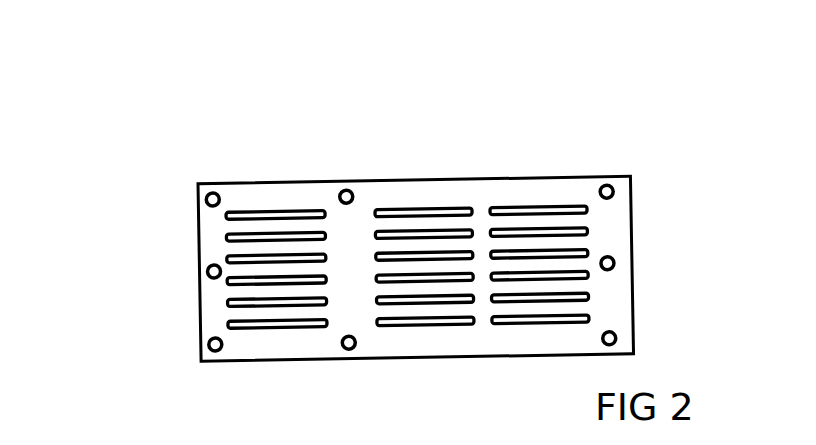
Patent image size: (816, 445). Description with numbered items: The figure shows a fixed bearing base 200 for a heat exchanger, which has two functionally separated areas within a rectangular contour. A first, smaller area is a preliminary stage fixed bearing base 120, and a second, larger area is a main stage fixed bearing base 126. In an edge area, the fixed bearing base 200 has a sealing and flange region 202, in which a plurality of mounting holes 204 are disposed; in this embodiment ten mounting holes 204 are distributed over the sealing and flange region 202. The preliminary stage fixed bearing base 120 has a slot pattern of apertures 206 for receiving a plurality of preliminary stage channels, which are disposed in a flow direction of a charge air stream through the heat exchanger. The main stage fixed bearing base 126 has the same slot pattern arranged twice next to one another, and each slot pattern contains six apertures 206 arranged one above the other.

The fixed bearing base 200 is at (583, 96).
The sealing and flange region 202 is at (198, 208).
The mounting holes 204 is at (340, 192).
The apertures 206 is at (533, 204).
The preliminary stage fixed bearing base 120 is at (226, 240).
The main stage fixed bearing base 126 is at (586, 228).